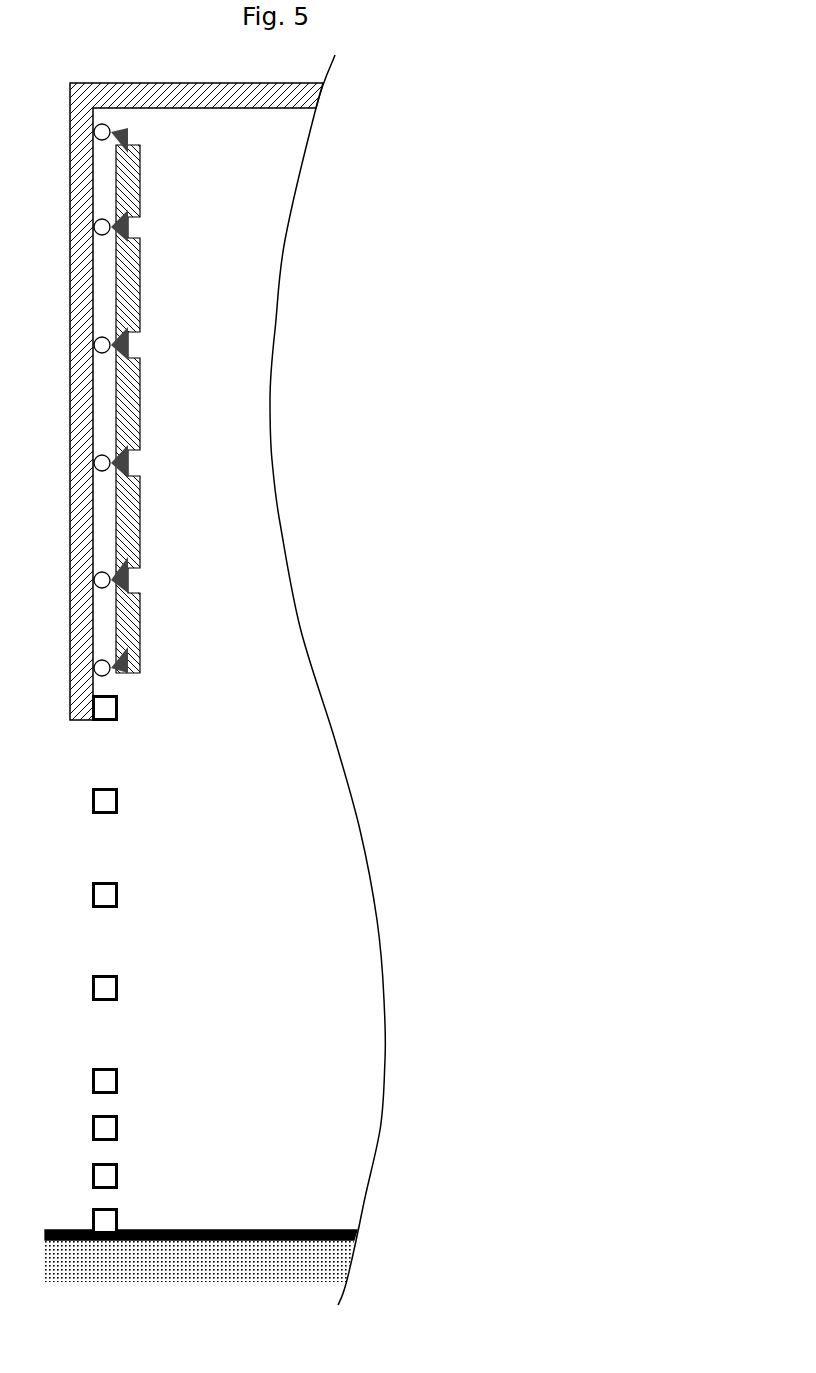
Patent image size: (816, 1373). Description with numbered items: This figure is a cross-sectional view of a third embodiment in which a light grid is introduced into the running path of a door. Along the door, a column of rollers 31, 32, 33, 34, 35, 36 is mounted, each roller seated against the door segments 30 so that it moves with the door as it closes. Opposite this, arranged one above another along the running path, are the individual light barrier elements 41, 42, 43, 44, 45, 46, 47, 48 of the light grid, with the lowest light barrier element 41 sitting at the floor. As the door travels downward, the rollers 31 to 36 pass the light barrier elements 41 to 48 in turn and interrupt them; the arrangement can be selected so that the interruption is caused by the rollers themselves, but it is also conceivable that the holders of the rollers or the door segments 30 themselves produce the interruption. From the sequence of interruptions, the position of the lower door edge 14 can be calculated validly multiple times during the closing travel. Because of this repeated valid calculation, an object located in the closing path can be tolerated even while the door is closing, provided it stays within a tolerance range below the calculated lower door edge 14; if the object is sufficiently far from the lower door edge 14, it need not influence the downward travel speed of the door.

The lower door edge 14 is at (140, 677).
The door segments 30 is at (102, 668).
The roller 31 is at (140, 620).
The roller 32 is at (102, 580).
The roller 33 is at (102, 463).
The roller 34 is at (102, 345).
The roller 35 is at (102, 227).
The roller 36 is at (102, 132).
The light barrier element 41 is at (118, 1222).
The light barrier element 42 is at (118, 1172).
The light barrier element 43 is at (118, 1125).
The light barrier element 44 is at (118, 1075).
The light barrier element 45 is at (118, 984).
The light barrier element 46 is at (118, 890).
The light barrier element 47 is at (118, 797).
The light barrier element 48 is at (118, 703).